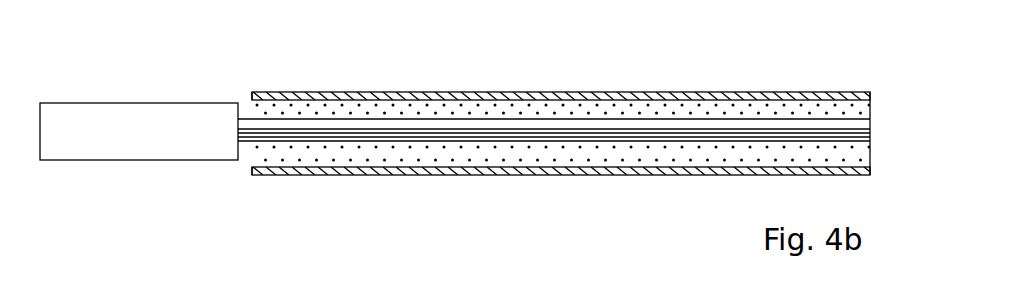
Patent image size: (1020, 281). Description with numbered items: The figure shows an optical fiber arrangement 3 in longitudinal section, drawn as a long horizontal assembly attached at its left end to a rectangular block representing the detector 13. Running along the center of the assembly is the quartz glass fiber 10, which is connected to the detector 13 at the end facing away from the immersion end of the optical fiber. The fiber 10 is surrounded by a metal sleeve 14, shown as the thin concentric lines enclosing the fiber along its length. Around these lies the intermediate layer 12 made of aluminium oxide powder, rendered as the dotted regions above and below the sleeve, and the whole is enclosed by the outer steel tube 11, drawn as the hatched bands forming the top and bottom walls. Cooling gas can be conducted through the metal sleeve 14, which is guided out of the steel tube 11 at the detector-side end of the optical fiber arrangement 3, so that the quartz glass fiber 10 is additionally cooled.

The optical fiber arrangement 3 is at (486, 90).
The quartz glass fiber 10 is at (583, 133).
The steel tube 11 is at (722, 93).
The intermediate layer 12 is at (362, 112).
The detector 13 is at (140, 132).
The metal sleeve 14 is at (382, 135).